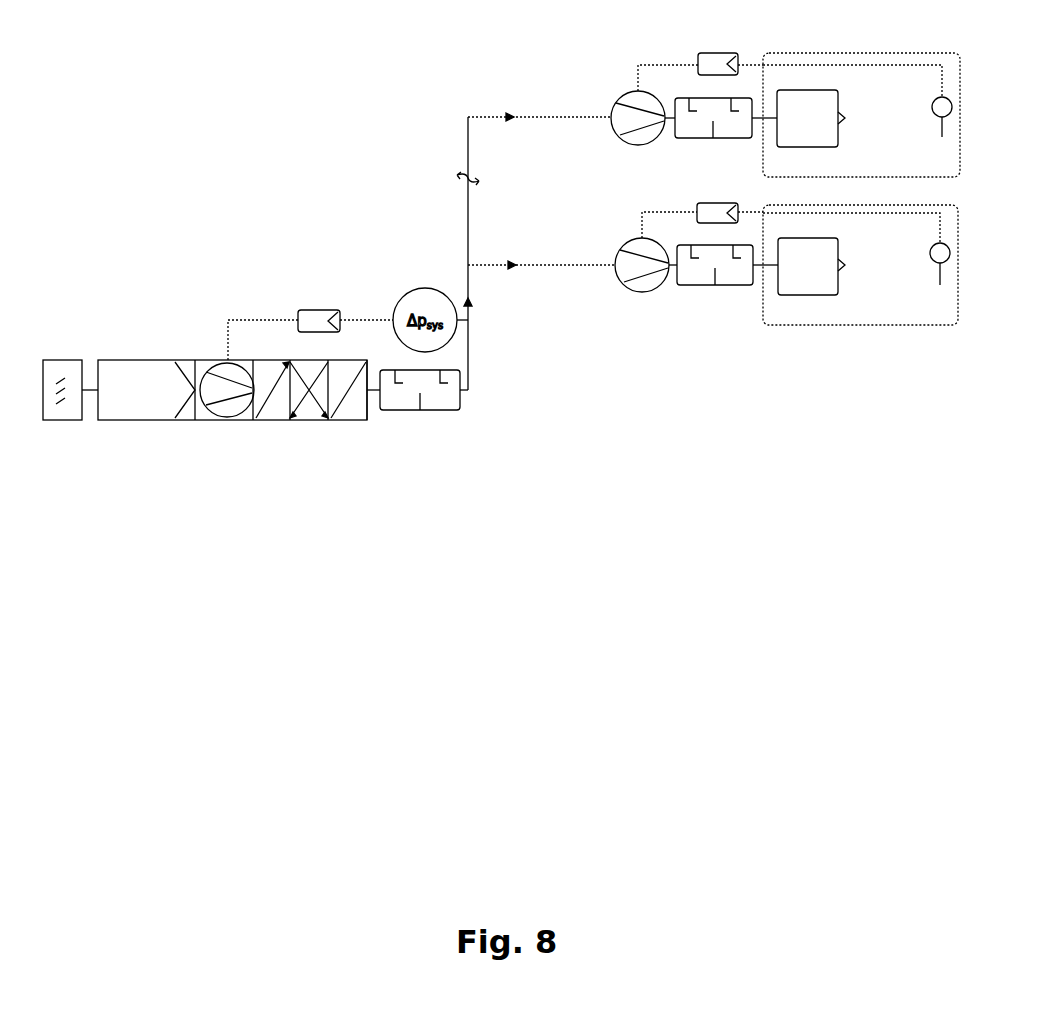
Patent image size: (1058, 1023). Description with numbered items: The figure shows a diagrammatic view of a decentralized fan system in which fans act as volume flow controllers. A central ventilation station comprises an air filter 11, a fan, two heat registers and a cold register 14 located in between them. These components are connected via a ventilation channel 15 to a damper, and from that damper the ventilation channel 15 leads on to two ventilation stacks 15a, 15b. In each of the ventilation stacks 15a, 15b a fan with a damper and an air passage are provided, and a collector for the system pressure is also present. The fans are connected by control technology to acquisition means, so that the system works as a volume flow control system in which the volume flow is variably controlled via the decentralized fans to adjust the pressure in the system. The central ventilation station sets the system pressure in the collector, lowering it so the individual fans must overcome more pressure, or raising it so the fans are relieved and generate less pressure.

The air filter 11 is at (139, 360).
The cold register 14 is at (315, 420).
The ventilation channel 15 is at (465, 237).
The ventilation stack 15a is at (492, 116).
The ventilation stack 15b is at (543, 265).